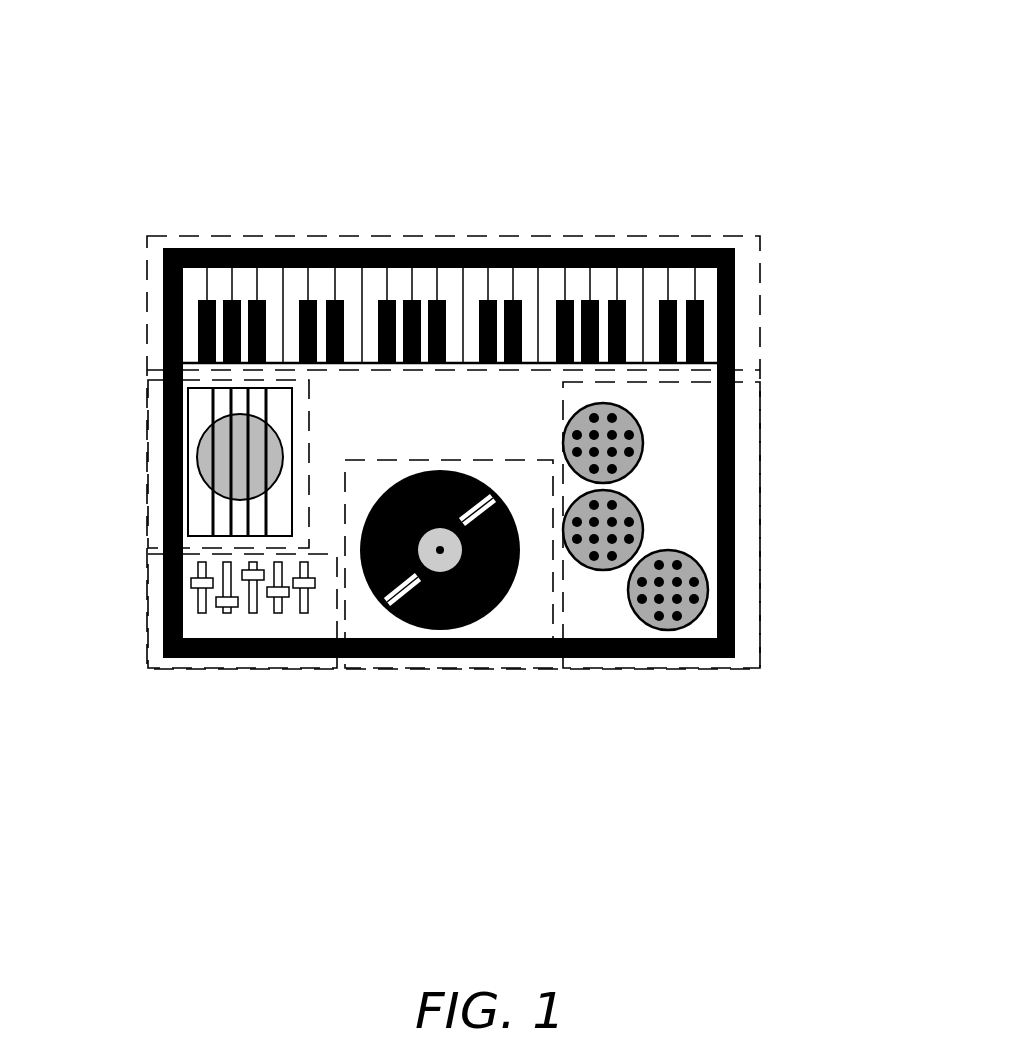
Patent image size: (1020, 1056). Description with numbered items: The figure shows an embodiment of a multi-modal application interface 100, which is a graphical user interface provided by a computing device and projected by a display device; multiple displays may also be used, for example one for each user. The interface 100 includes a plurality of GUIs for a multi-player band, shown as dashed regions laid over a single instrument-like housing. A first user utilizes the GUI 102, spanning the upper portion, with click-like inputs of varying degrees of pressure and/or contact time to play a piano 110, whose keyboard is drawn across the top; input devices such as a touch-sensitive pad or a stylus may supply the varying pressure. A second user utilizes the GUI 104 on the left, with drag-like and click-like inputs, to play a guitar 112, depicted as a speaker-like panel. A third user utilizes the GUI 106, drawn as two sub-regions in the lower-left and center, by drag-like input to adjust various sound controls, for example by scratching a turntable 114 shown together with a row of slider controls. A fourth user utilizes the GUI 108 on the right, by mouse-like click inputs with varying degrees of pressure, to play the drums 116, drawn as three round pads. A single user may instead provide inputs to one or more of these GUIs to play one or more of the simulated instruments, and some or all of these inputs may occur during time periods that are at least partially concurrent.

The multi-modal application interface 100 is at (730, 125).
The GUI 102 is at (177, 236).
The GUI 104 is at (150, 520).
The GUI 106 is at (218, 670).
The GUI 108 is at (695, 670).
The piano 110 is at (362, 250).
The guitar 112 is at (223, 462).
The turntable 114 is at (215, 605).
The drums 116 is at (640, 463).